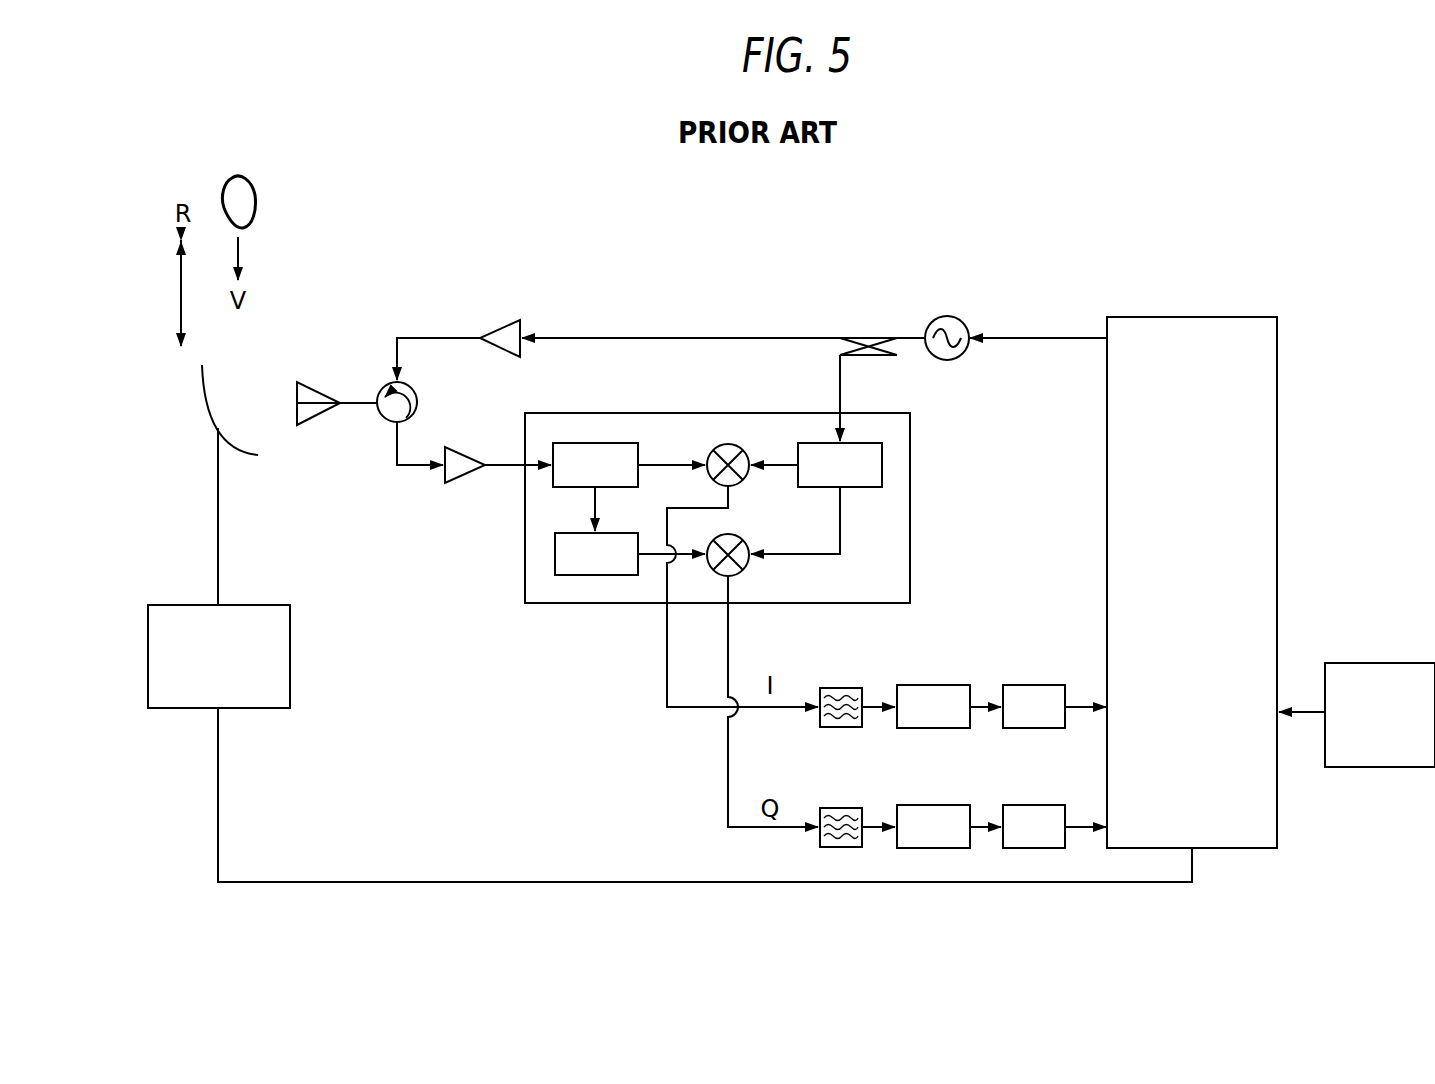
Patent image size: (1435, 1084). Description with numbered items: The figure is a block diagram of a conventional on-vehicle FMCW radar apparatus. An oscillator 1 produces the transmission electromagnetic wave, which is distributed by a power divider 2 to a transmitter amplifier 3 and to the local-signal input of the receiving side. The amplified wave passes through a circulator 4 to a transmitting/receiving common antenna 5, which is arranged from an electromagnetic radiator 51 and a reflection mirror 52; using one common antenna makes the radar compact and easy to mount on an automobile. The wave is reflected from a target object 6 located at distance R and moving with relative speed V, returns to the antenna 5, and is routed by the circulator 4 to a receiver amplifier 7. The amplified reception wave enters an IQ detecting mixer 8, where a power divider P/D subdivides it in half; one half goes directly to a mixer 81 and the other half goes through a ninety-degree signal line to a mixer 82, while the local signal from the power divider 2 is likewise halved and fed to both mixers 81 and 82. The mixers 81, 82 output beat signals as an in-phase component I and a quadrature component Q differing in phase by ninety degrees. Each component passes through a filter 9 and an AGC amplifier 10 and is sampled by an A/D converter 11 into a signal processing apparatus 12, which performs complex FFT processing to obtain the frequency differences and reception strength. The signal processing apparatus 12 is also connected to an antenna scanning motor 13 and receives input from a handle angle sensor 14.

The oscillator 1 is at (947, 314).
The power divider 2 is at (865, 333).
The transmitter amplifier 3 is at (497, 320).
The circulator 4 is at (418, 403).
The transmitting/receiving common antenna 5 is at (261, 402).
The target object 6 is at (250, 186).
The receiver amplifier 7 is at (465, 480).
The IQ detecting mixer 8 is at (717, 480).
The filter 9 is at (838, 687).
The AGC amplifier 10 is at (930, 684).
The A/D converter 11 is at (1032, 684).
The signal processing apparatus 12 is at (1190, 316).
The antenna scanning motor 13 is at (290, 658).
The handle angle sensor 14 is at (1382, 662).
The electromagnetic radiator 51 is at (322, 418).
The reflection mirror 52 is at (207, 380).
The mixer 81 is at (743, 450).
The mixer 82 is at (743, 540).